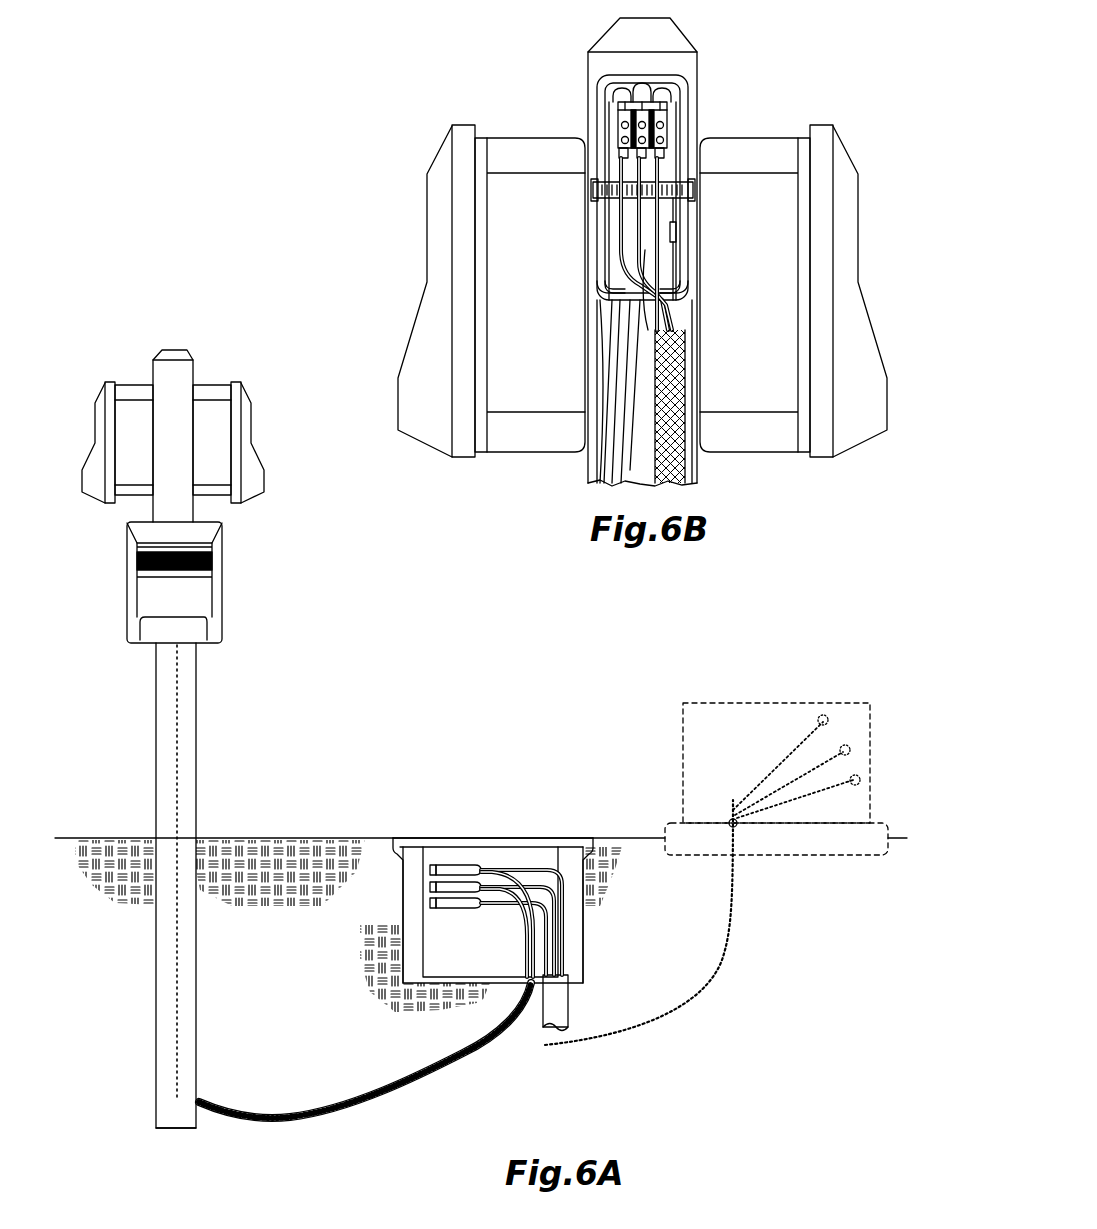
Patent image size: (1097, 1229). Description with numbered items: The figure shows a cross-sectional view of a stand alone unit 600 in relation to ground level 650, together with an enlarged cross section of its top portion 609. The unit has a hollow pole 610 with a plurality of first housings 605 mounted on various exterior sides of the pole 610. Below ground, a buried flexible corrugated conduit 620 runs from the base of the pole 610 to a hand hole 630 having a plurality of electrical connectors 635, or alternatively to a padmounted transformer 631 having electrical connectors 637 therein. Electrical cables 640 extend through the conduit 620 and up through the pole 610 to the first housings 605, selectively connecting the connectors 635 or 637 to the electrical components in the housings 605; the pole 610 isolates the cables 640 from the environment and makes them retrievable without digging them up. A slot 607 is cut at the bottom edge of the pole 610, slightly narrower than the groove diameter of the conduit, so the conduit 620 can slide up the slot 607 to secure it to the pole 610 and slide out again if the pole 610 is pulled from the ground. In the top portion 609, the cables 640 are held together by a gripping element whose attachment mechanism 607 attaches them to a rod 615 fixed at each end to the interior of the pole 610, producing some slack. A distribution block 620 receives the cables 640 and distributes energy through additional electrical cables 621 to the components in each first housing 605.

In FIG. 6A, the stand alone unit 600 is at (412, 640).
In FIG. 6B, the first housings 605 is at (428, 172).
In FIG. 6A, the first housings 605 is at (132, 382).
In FIG. 6B, the slot 607 is at (676, 237).
In FIG. 6A, the slot 607 is at (227, 1105).
In FIG. 6B, the top portion 609 is at (559, 66).
In FIG. 6A, the top portion 609 is at (210, 360).
In FIG. 6B, the pole 610 is at (692, 357).
In FIG. 6A, the pole 610 is at (196, 700).
In FIG. 6B, the rod 615 is at (653, 163).
In FIG. 6B, the flexible conduit / distribution block 620 is at (664, 116).
In FIG. 6A, the flexible conduit / distribution block 620 is at (445, 1075).
In FIG. 6B, the additional electrical cables 621 is at (590, 333).
In FIG. 6A, the hand hole 630 is at (548, 838).
In FIG. 6A, the padmounted transformer 631 is at (747, 703).
In FIG. 6A, the electrical connectors 635 is at (430, 903).
In FIG. 6A, the electrical connectors 637 is at (846, 735).
In FIG. 6B, the electrical cables 640 is at (687, 447).
In FIG. 6A, the electrical cables 640 is at (178, 953).
In FIG. 6A, the ground level 650 is at (312, 838).